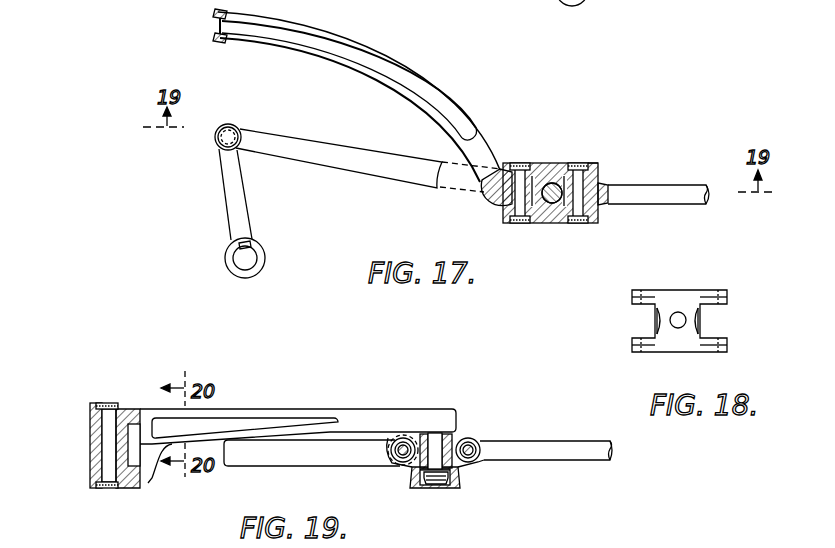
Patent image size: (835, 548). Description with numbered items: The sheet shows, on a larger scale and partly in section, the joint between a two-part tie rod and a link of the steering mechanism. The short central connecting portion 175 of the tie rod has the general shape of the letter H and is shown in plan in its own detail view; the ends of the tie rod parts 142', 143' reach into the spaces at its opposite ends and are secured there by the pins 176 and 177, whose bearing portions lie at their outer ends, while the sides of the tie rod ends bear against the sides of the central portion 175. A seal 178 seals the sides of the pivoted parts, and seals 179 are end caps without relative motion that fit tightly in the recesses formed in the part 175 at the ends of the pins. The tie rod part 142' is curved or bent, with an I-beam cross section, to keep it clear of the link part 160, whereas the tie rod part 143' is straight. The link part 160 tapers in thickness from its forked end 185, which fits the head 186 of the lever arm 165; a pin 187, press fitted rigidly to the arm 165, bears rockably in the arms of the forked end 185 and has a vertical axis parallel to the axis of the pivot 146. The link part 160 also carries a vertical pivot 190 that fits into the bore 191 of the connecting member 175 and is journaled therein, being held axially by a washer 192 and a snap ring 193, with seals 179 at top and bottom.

In FIG. 17, the tie rod part 142' is at (356, 95).
In FIG. 19, the tie rod part 142' is at (312, 464).
In FIG. 17, the tie rod part 143' is at (658, 180).
In FIG. 19, the tie rod part 143' is at (546, 438).
In FIG. 17, the pivot 146 is at (254, 259).
In FIG. 17, the link part 160 is at (373, 168).
In FIG. 19, the link part 160 is at (387, 414).
In FIG. 17, the lever arm 165 is at (243, 214).
In FIG. 17, the central connecting portion 175 is at (550, 163).
In FIG. 18, the central connecting portion 175 is at (680, 299).
In FIG. 17, the pin 176 is at (518, 212).
In FIG. 17, the pin 177 is at (586, 188).
In FIG. 17, the seal 178 is at (598, 166).
In FIG. 17, the seals 179 is at (514, 162).
In FIG. 19, the seals 179 is at (107, 402).
In FIG. 19, the forked end 185 is at (149, 472).
In FIG. 19, the head 186 is at (92, 444).
In FIG. 17, the pin 187 is at (236, 126).
In FIG. 19, the pin 187 is at (110, 436).
In FIG. 17, the vertical pivot 190 is at (554, 204).
In FIG. 19, the vertical pivot 190 is at (440, 448).
In FIG. 18, the bore 191 is at (686, 319).
In FIG. 19, the washer 192 is at (437, 486).
In FIG. 19, the snap ring 193 is at (426, 484).